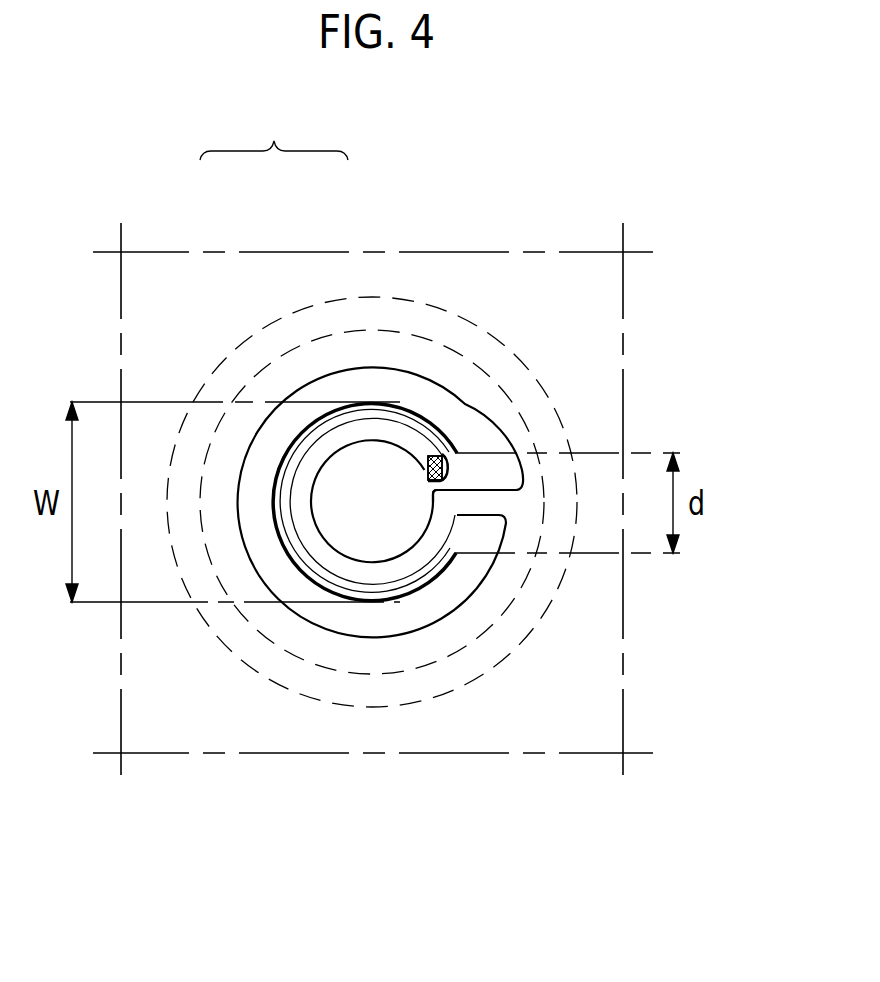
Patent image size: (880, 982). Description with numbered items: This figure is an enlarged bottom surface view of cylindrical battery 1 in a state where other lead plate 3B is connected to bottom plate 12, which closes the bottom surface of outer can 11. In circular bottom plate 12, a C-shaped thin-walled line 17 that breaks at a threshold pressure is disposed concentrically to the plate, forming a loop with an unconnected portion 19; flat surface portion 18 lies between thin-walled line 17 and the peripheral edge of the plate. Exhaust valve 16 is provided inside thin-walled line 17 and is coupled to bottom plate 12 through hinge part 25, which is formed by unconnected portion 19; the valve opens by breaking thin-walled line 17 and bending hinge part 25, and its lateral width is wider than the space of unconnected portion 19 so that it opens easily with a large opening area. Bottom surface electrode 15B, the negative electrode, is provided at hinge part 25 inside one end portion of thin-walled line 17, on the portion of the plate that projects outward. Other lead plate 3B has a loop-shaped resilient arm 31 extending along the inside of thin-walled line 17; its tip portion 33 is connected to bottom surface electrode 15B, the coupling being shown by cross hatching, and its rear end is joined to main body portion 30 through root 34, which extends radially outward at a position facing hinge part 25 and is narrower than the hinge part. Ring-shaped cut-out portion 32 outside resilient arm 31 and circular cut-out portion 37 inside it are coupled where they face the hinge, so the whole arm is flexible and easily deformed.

The cylindrical battery 1 is at (553, 597).
The other lead plate 3B is at (525, 227).
The outer can 11 is at (536, 636).
The bottom plate 12 is at (274, 129).
The bottom surface electrode 15B is at (437, 488).
The exhaust valve 16 is at (363, 470).
The thin-walled line 17 is at (410, 416).
The flat surface portion 18 is at (255, 492).
The unconnected portion 19 is at (463, 473).
The hinge part 25 is at (435, 468).
The main body portion 30 is at (172, 706).
The resilient arm 31 is at (307, 525).
The cut-out portion 32 is at (380, 366).
The tip portion 33 is at (433, 456).
The root 34 is at (483, 503).
The cut-out portion 37 is at (347, 547).